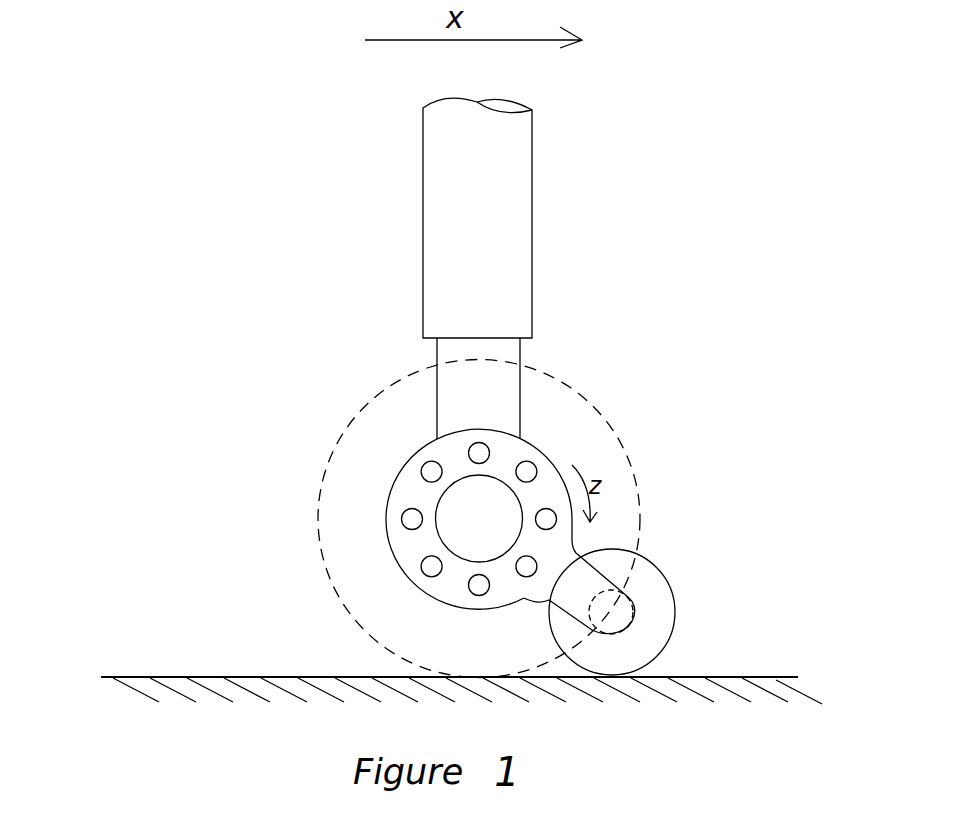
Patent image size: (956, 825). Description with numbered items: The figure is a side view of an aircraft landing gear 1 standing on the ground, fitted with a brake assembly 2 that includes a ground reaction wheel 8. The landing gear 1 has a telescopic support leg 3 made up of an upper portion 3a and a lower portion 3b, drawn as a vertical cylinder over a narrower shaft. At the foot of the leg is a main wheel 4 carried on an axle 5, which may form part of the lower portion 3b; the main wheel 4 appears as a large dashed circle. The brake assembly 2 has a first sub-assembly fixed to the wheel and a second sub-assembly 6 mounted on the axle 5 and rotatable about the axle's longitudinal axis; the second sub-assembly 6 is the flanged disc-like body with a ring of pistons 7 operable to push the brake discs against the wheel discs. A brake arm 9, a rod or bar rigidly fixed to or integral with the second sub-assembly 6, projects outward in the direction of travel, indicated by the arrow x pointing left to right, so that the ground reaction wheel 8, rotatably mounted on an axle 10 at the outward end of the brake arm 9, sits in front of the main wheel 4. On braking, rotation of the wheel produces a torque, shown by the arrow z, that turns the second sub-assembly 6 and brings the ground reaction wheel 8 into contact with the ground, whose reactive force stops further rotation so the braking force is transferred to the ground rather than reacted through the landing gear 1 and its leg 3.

The aircraft landing gear 1 is at (90, 147).
The brake assembly 2 is at (414, 454).
The telescopic support leg 3 is at (533, 240).
The upper portion 3a is at (450, 188).
The lower portion 3b is at (450, 398).
The main wheel 4 is at (578, 402).
The axle 5 is at (467, 543).
The second sub-assembly 6 is at (417, 492).
The pistons 7 is at (437, 560).
The ground reaction wheel 8 is at (655, 583).
The brake arm 9 is at (590, 583).
The axle 10 is at (615, 612).